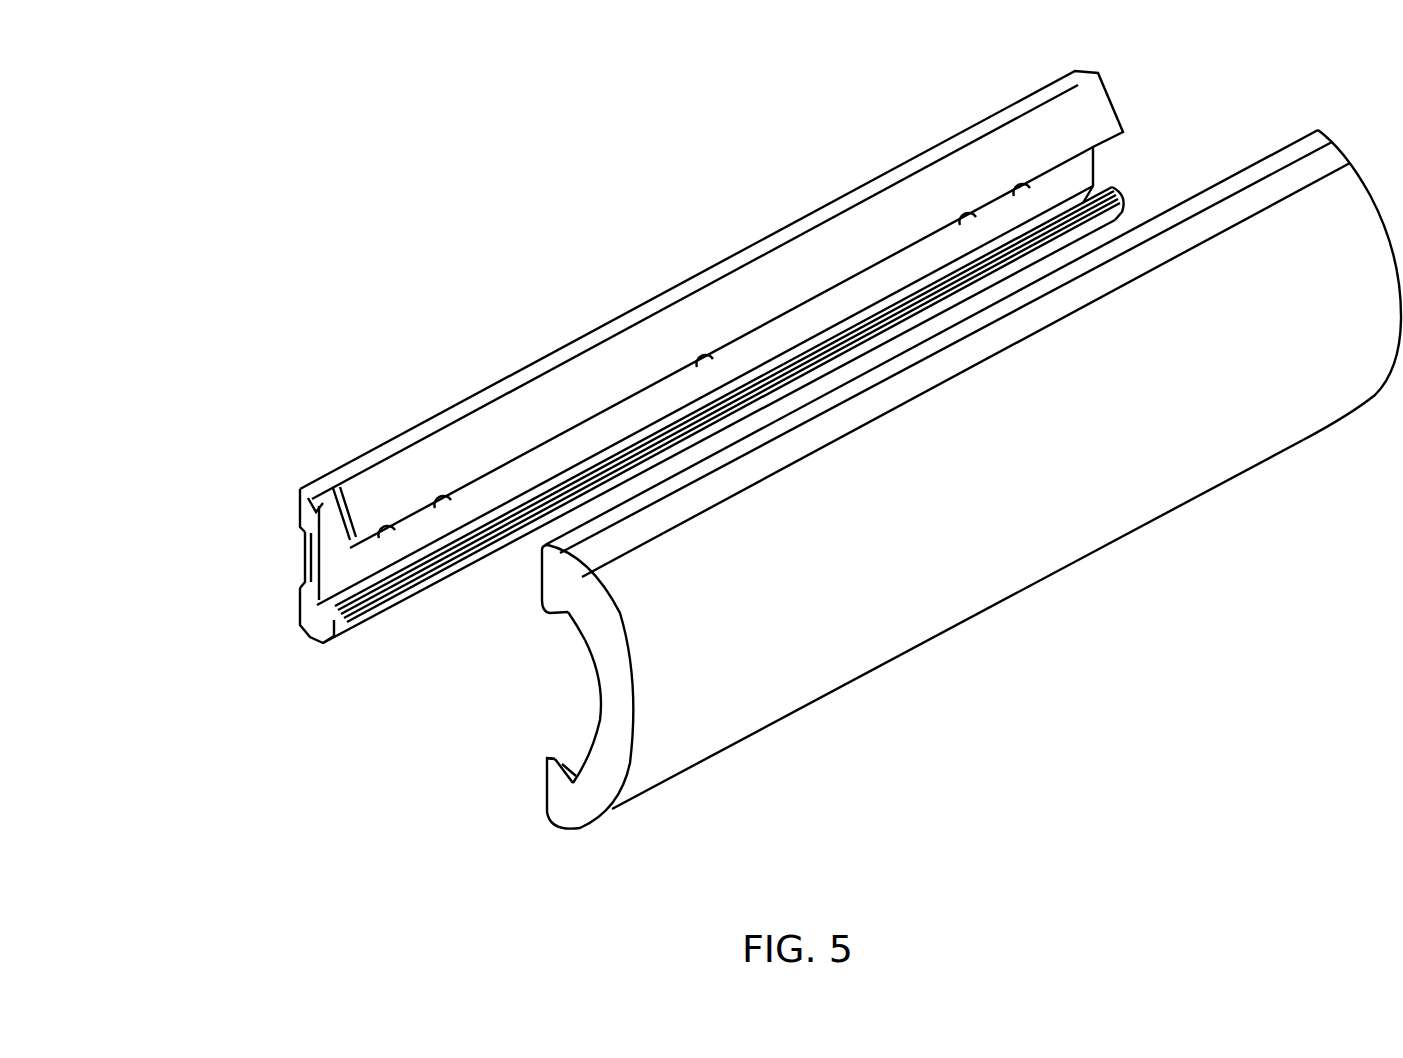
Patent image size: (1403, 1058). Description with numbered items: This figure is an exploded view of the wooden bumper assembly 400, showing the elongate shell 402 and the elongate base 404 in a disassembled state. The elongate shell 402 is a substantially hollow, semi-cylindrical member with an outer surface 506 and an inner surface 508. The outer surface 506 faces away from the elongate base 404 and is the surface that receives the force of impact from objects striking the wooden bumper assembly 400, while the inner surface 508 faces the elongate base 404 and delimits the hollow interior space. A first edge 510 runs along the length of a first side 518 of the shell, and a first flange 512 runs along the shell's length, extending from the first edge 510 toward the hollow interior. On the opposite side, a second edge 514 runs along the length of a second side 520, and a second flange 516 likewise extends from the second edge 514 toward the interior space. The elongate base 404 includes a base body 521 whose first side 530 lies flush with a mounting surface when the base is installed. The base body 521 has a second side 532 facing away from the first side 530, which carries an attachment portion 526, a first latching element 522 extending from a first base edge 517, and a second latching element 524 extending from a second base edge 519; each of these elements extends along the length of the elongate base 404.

The wooden bumper assembly 400 is at (770, 148).
The elongate shell 402 is at (1062, 540).
The elongate base 404 is at (307, 545).
The outer surface 506 is at (885, 578).
The inner surface 508 is at (590, 682).
The first edge 510 is at (540, 565).
The first flange 512 is at (556, 597).
The second edge 514 is at (555, 823).
The second flange 516 is at (553, 775).
The first base edge 517 is at (373, 443).
The first side 518 is at (1183, 153).
The second base edge 519 is at (307, 600).
The second side 520 is at (815, 742).
The base body 521 is at (307, 565).
The first latching element 522 is at (318, 490).
The second latching element 524 is at (320, 627).
The attachment portion 526 is at (313, 580).
The first side 530 is at (300, 525).
The second side 532 is at (308, 558).